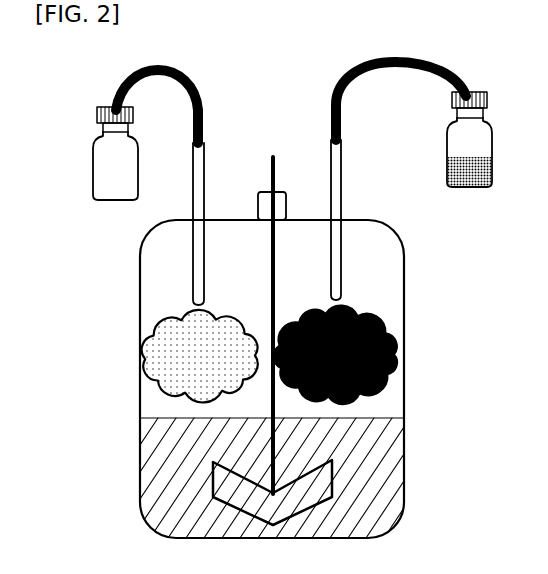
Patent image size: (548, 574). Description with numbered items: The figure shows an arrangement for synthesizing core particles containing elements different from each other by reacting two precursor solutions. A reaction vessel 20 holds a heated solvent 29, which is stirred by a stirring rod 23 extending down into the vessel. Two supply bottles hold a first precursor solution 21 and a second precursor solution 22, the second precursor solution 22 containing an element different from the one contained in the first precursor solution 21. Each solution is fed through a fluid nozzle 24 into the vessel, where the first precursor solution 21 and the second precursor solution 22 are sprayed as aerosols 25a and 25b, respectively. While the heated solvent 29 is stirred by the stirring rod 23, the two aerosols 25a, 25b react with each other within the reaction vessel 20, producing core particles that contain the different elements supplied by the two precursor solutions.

The reaction vessel 20 is at (402, 335).
The first precursor solution 21 is at (474, 170).
The second precursor solution 22 is at (115, 185).
The stirring rod 23 is at (266, 190).
The fluid nozzle 24 is at (197, 267).
The aerosol of first precursor solution 25a is at (350, 387).
The aerosol of second precursor solution 25b is at (175, 388).
The heated solvent 29 is at (386, 494).